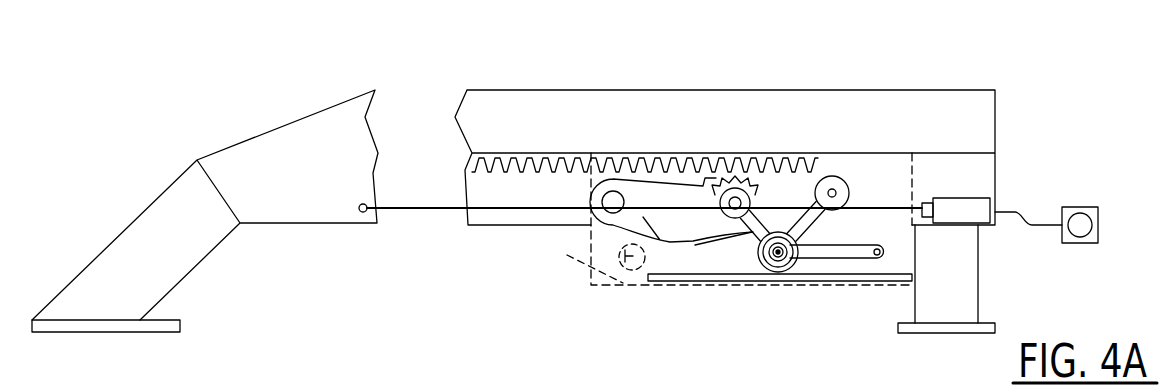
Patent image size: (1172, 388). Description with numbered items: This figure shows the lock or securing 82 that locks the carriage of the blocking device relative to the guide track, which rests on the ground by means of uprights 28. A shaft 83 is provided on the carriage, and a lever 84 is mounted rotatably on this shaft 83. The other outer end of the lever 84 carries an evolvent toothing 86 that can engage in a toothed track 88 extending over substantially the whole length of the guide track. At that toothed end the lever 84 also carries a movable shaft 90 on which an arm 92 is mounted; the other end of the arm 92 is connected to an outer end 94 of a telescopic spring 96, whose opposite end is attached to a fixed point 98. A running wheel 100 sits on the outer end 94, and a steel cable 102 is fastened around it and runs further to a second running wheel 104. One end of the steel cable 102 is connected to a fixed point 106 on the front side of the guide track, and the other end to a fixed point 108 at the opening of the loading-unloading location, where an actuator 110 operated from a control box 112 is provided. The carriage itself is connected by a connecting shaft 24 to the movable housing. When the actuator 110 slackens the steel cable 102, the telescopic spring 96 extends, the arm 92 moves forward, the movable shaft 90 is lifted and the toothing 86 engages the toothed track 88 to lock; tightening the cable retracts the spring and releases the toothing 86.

The lock or securing 82 is at (968, 65).
The shaft 83 is at (602, 198).
The lever 84 is at (678, 222).
The evolvent toothing 86 is at (750, 187).
The toothed track 88 is at (702, 158).
The movable shaft 90 is at (730, 191).
The arm 92 is at (753, 233).
The outer end 94 is at (767, 262).
The telescopic spring 96 is at (832, 258).
The fixed point 98 is at (880, 258).
The running wheel 100 is at (782, 272).
The steel cable 102 is at (435, 210).
The second running wheel 104 is at (843, 188).
The fixed point 106 is at (350, 223).
The fixed point 108 is at (925, 193).
The actuator 110 is at (960, 207).
The control box 112 is at (1082, 218).
The connecting shaft 24 is at (625, 287).
The uprights 28 is at (960, 303).